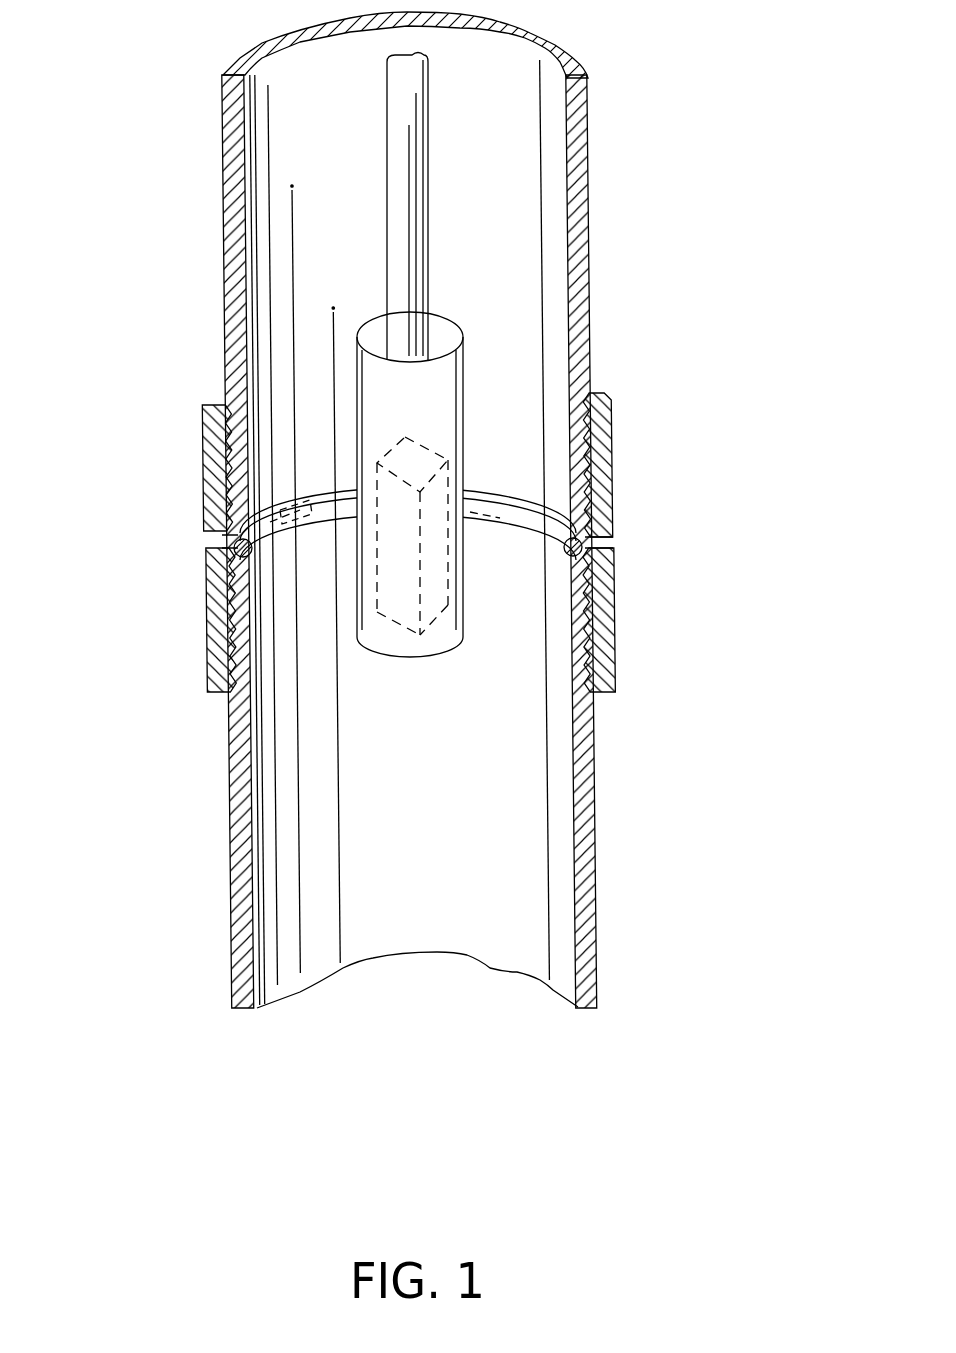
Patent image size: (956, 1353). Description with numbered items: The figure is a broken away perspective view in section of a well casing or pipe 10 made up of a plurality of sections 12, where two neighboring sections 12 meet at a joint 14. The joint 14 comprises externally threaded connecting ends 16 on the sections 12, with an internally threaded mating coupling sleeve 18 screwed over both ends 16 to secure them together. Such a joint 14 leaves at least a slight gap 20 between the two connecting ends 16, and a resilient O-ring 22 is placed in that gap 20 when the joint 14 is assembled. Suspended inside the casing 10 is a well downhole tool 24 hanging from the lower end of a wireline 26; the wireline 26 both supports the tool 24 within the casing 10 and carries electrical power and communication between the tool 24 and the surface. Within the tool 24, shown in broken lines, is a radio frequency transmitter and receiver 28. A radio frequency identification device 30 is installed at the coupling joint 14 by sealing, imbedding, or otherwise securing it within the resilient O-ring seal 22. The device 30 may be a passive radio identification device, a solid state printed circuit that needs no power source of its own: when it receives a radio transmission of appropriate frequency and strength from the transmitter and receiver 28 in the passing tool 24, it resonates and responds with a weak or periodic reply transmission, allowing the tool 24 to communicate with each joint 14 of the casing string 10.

The well casing 10 is at (443, 1088).
The section 12 is at (224, 230).
The joint 14 is at (150, 528).
The externally threaded connecting end 16 is at (613, 460).
The coupling sleeve 18 is at (614, 535).
The gap 20 is at (510, 492).
The O-ring 22 is at (518, 522).
The downhole tool 24 is at (428, 410).
The wireline 26 is at (428, 172).
The radio frequency transmitter and receiver 28 is at (402, 627).
The radio frequency identification device 30 is at (300, 510).